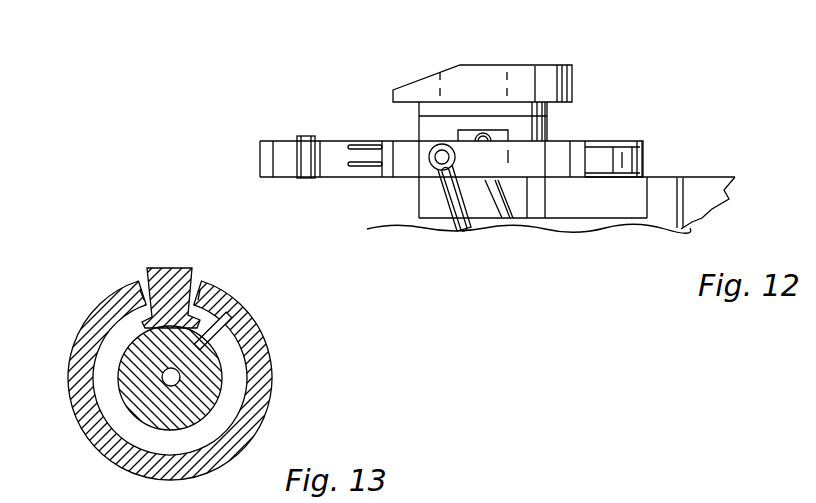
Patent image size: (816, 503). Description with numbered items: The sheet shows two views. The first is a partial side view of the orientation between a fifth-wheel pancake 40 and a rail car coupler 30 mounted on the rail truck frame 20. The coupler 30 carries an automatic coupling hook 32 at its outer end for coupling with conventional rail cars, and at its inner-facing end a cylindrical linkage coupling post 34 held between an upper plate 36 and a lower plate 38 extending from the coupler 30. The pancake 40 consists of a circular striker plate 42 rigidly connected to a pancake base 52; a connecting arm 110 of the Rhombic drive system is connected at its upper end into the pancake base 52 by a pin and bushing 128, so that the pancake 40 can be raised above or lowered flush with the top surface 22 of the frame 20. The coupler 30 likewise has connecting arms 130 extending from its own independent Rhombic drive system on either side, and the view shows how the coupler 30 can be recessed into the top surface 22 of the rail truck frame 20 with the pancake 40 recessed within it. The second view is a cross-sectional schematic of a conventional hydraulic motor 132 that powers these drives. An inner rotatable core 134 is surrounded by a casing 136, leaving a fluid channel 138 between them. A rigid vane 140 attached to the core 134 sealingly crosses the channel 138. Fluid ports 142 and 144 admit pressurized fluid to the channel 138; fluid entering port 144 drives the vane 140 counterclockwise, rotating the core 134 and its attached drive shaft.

In FIG. 12, the rail truck frame 20 is at (702, 217).
In FIG. 12, the top surface of rail truck frame 22 is at (702, 180).
In FIG. 12, the rail car coupler 30 is at (333, 174).
In FIG. 12, the automatic coupling hook 32 is at (293, 178).
In FIG. 12, the linkage coupling post 34 is at (642, 148).
In FIG. 12, the upper plate 36 is at (637, 142).
In FIG. 12, the lower plate 38 is at (642, 172).
In FIG. 12, the fifth-wheel pancake 40 is at (578, 68).
In FIG. 12, the circular striker plate 42 is at (556, 66).
In FIG. 12, the pancake base 52 is at (425, 121).
In FIG. 12, the connecting arm 110 is at (500, 198).
In FIG. 12, the pin and bushing 128 is at (433, 166).
In FIG. 12, the connecting arm 130 is at (463, 232).
In FIG. 13, the hydraulic motor 132 is at (273, 380).
In FIG. 13, the core 134 is at (223, 370).
In FIG. 13, the casing 136 is at (270, 342).
In FIG. 13, the fluid channel 138 is at (230, 402).
In FIG. 13, the rigid vane 140 is at (247, 308).
In FIG. 13, the fluid port 142 is at (142, 272).
In FIG. 13, the fluid port 144 is at (202, 274).